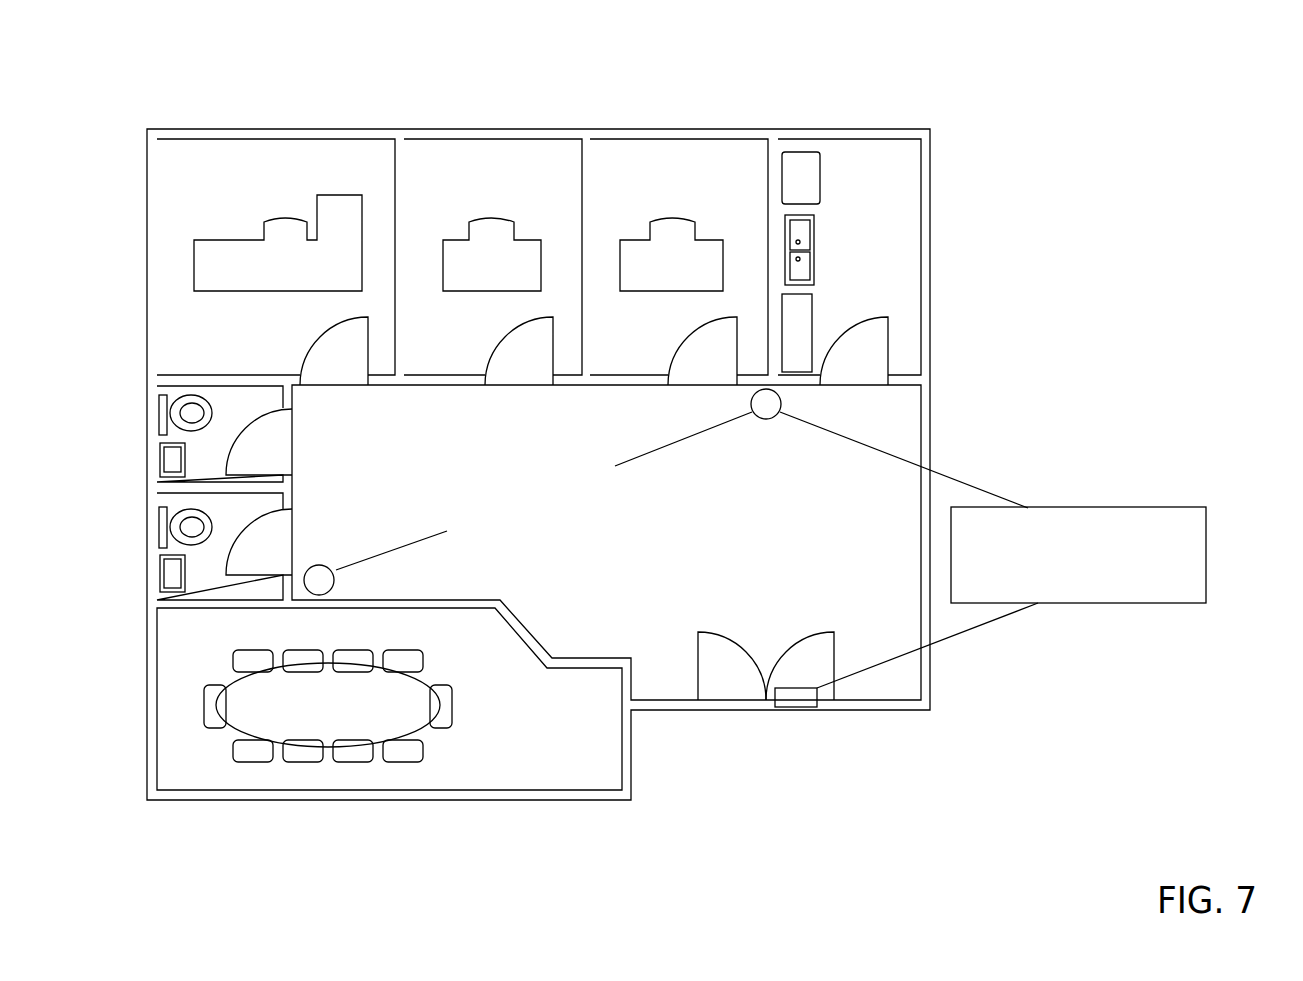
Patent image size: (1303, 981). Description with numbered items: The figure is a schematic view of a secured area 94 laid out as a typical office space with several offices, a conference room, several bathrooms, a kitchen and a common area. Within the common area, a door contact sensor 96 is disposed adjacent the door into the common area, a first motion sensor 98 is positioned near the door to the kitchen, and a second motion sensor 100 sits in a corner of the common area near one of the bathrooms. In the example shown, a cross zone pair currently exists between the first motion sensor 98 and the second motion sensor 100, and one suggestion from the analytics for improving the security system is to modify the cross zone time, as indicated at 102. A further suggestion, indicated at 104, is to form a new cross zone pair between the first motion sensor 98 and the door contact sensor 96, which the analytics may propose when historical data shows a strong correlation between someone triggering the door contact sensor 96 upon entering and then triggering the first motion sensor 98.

The secured area 94 is at (1080, 82).
The door contact sensor 96 is at (812, 705).
The first motion sensor 98 is at (781, 402).
The second motion sensor 100 is at (336, 578).
The suggestion to modify the cross zone time 102 is at (455, 442).
The suggestion to form a new cross zone pair 104 is at (1100, 507).